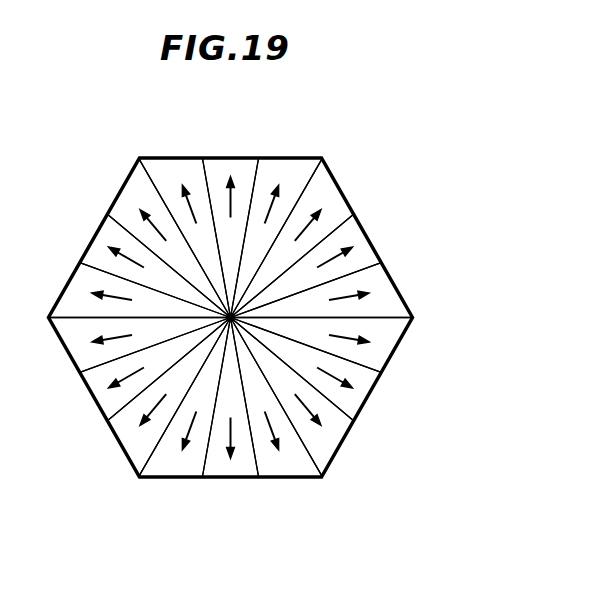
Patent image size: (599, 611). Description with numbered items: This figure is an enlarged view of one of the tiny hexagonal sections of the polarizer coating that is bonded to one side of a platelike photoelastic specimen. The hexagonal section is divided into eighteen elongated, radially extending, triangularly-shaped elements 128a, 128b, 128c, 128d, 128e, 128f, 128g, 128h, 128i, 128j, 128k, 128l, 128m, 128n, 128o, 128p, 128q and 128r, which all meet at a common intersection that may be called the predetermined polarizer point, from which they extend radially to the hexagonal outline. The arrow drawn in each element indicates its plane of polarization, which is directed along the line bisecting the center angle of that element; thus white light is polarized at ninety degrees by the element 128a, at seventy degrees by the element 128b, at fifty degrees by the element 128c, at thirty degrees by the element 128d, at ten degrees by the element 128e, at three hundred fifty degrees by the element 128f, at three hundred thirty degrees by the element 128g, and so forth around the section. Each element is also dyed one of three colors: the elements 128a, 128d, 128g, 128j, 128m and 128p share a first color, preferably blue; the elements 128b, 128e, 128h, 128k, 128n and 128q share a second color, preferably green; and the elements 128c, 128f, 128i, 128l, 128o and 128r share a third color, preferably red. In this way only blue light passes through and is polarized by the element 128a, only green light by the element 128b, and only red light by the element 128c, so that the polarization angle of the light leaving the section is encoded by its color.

The triangularly-shaped element 128a is at (227, 167).
The triangularly-shaped element 128b is at (285, 167).
The triangularly-shaped element 128c is at (332, 192).
The triangularly-shaped element 128d is at (358, 243).
The triangularly-shaped element 128e is at (383, 287).
The triangularly-shaped element 128f is at (385, 343).
The triangularly-shaped element 128g is at (352, 403).
The triangularly-shaped element 128h is at (328, 442).
The triangularly-shaped element 128i is at (293, 463).
The triangularly-shaped element 128j is at (250, 468).
The triangularly-shaped element 128k is at (183, 463).
The triangularly-shaped element 128l is at (138, 440).
The triangularly-shaped element 128m is at (92, 385).
The triangularly-shaped element 128n is at (72, 335).
The triangularly-shaped element 128o is at (78, 303).
The triangularly-shaped element 128p is at (112, 229).
The triangularly-shaped element 128q is at (140, 190).
The triangularly-shaped element 128r is at (173, 167).